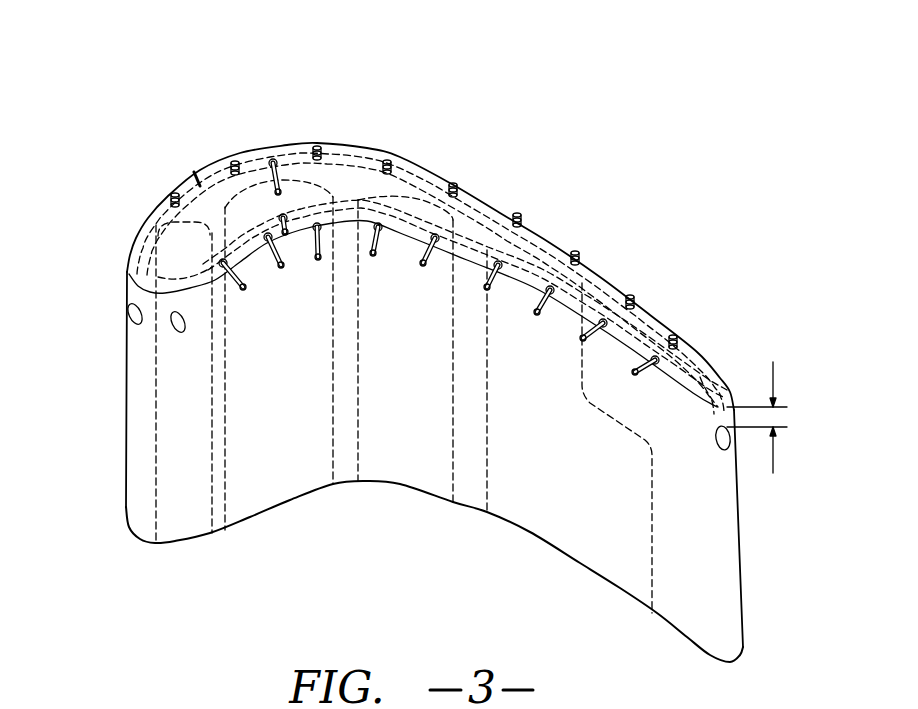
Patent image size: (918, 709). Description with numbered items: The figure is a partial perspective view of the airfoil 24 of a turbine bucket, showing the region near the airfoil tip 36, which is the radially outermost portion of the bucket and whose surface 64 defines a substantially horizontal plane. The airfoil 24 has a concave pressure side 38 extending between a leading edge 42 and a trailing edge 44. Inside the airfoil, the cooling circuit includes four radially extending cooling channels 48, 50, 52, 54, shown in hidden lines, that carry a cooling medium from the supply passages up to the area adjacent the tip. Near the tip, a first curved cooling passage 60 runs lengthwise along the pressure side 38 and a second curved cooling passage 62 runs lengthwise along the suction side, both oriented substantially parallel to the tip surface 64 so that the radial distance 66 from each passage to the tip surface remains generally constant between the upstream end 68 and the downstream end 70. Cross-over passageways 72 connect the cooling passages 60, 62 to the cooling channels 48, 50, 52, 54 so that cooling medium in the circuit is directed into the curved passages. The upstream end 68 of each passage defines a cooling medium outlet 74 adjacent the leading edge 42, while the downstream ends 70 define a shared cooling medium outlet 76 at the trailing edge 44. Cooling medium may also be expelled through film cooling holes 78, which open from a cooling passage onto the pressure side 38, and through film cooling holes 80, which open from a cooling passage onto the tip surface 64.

The airfoil 24 is at (412, 257).
The airfoil tip 36 is at (631, 269).
The pressure side 38 is at (395, 468).
The leading edge 42 is at (128, 448).
The trailing edge 44 is at (745, 620).
The cooling channel 48 is at (160, 512).
The cooling channel 50 is at (228, 505).
The cooling channel 52 is at (453, 487).
The cooling channel 54 is at (655, 588).
The first curved cooling passage 60 is at (252, 280).
The second curved cooling passage 62 is at (194, 172).
The tip surface 64 is at (472, 227).
The radial distance 66 is at (777, 417).
The upstream end 68 is at (128, 290).
The downstream end 70 is at (708, 410).
The cross-over passageway 72 is at (286, 150).
The cooling medium outlet 74 is at (130, 316).
The shared cooling medium outlet 76 is at (723, 452).
The film cooling hole 78 is at (378, 253).
The film cooling hole 80 is at (322, 151).